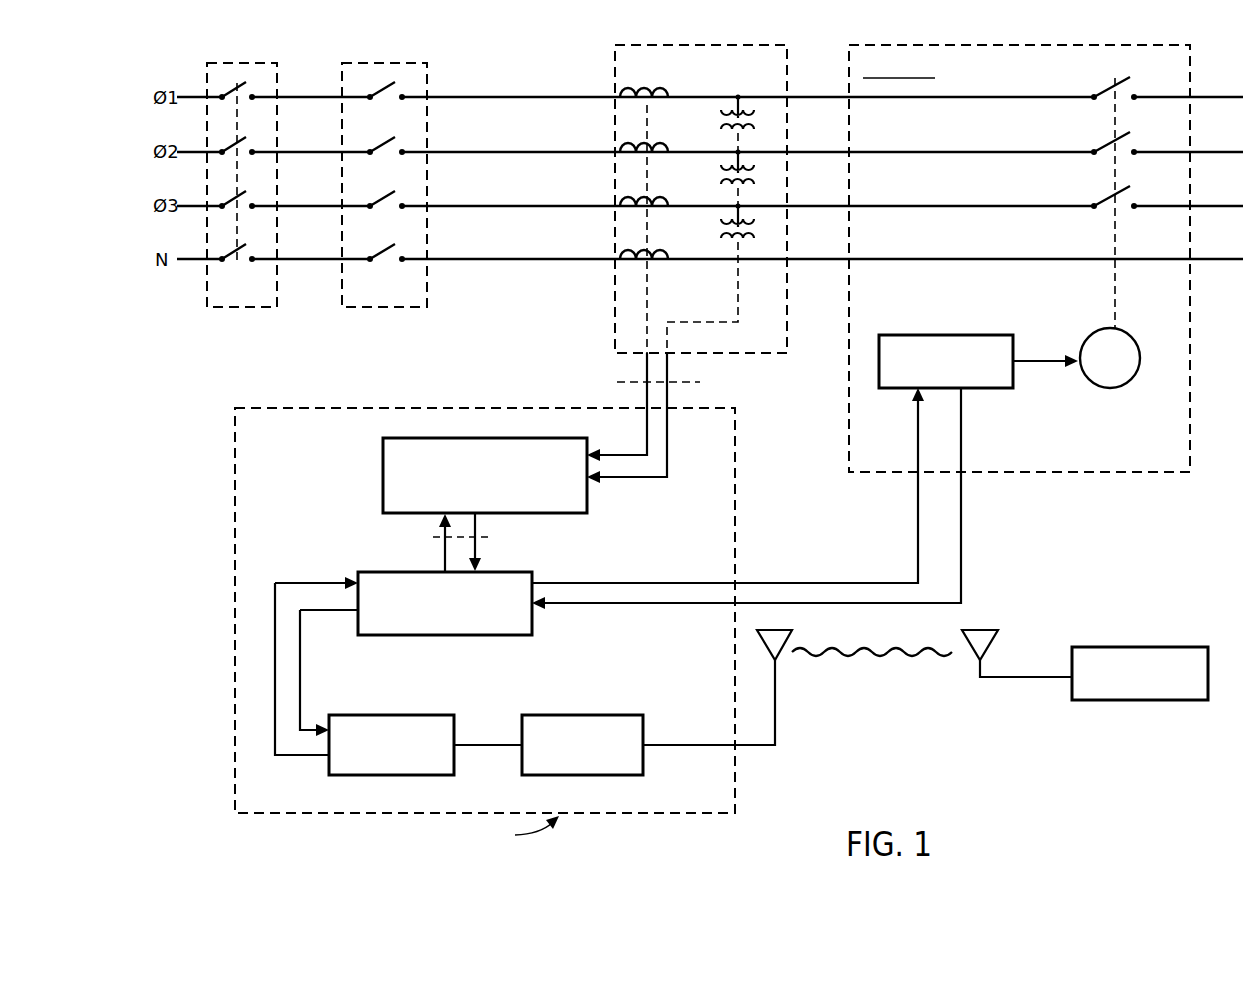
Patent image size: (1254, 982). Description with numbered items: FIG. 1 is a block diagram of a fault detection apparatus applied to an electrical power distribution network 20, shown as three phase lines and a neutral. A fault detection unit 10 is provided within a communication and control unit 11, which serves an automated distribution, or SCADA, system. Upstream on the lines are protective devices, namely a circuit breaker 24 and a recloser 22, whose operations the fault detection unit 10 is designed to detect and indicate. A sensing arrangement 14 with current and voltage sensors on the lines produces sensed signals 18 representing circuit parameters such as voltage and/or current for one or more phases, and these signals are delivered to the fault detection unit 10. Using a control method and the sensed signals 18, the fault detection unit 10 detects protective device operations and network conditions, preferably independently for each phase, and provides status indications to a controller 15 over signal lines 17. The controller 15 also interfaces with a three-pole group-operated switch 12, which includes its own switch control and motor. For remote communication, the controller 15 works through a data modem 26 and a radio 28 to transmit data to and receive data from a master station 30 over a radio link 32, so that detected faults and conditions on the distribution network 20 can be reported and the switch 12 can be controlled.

The fault detection unit 10 is at (383, 480).
The communication and control unit 11 is at (654, 822).
The three-pole group-operated switch 12 is at (1010, 480).
The sensing arrangement 14 is at (605, 293).
The controller 15 is at (382, 572).
The signal lines 17 is at (489, 537).
The sensed signals 18 is at (623, 382).
The electrical power distribution network 20 is at (600, 64).
The recloser 22 is at (432, 284).
The circuit breaker 24 is at (282, 284).
The data modem 26 is at (428, 775).
The radio 28 is at (608, 775).
The master station 30 is at (1131, 711).
The radio link 32 is at (884, 666).